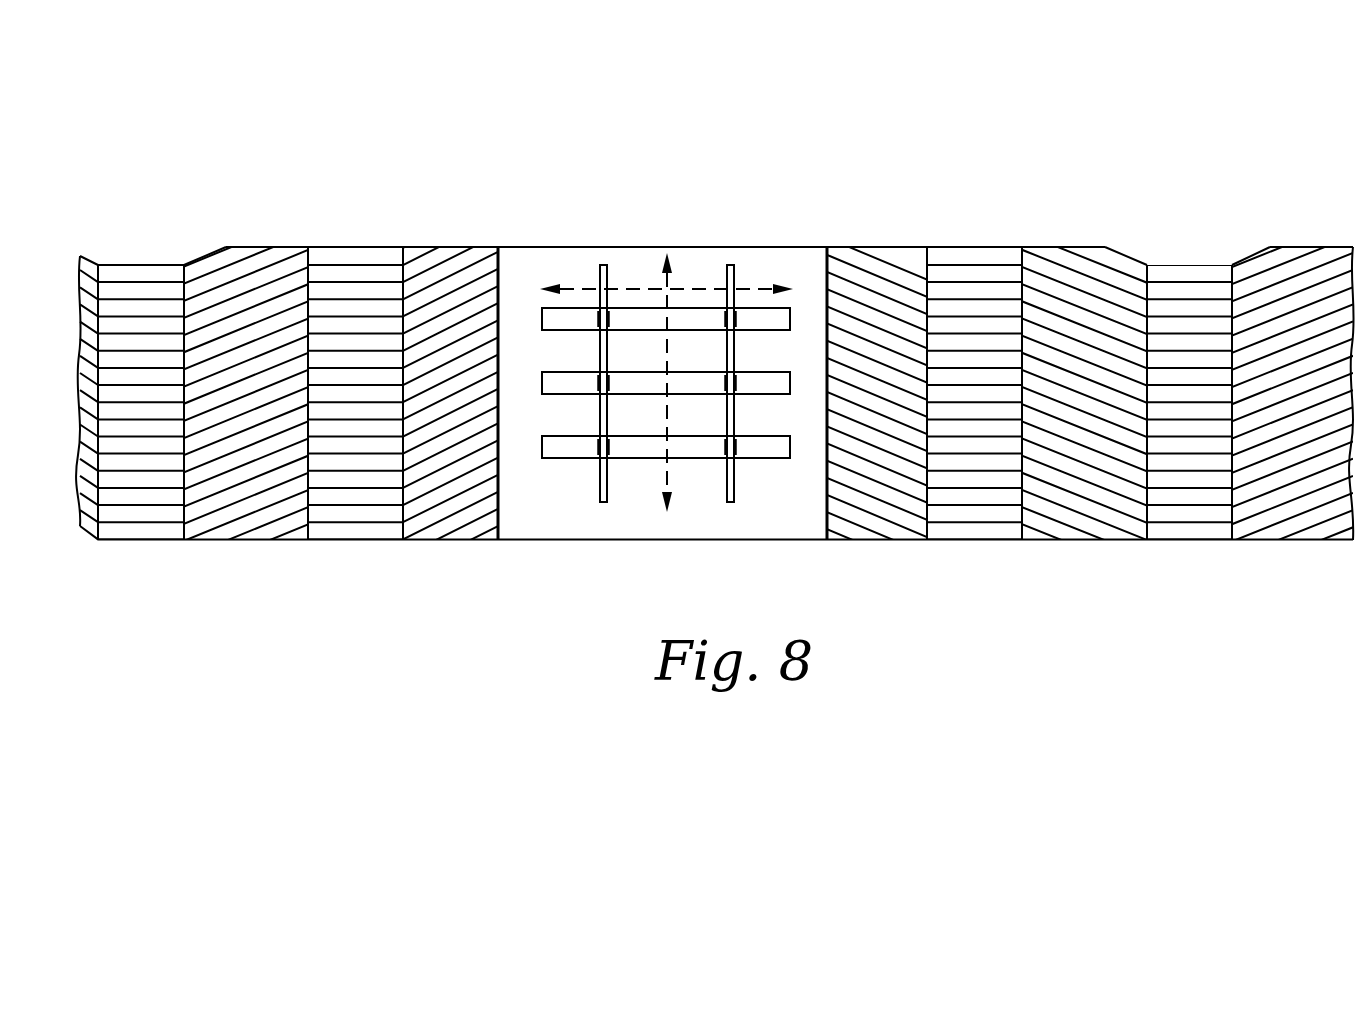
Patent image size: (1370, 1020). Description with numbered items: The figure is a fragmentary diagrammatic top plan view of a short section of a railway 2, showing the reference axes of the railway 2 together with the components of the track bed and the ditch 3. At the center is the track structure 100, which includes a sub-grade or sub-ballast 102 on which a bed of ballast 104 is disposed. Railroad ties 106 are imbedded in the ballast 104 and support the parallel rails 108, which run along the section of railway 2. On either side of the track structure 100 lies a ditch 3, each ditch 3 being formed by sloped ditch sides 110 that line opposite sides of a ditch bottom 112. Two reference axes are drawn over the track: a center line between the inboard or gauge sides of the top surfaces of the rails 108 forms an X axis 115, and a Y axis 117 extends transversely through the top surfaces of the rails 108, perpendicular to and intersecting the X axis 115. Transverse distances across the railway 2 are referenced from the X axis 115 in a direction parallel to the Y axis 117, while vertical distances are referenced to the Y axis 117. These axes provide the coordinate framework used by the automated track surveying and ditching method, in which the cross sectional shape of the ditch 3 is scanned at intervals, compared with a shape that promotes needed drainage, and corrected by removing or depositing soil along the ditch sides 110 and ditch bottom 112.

The track structure 100 is at (359, 120).
The railway 2 is at (522, 176).
The ditch 3 is at (131, 208).
The sub-ballast 102 is at (327, 530).
The ballast 104 is at (453, 507).
The railroad ties 106 is at (783, 385).
The rails 108 is at (602, 472).
The ditch sides 110 is at (1053, 528).
The ditch bottom 112 is at (1197, 520).
The X axis 115 is at (663, 465).
The Y axis 117 is at (633, 287).